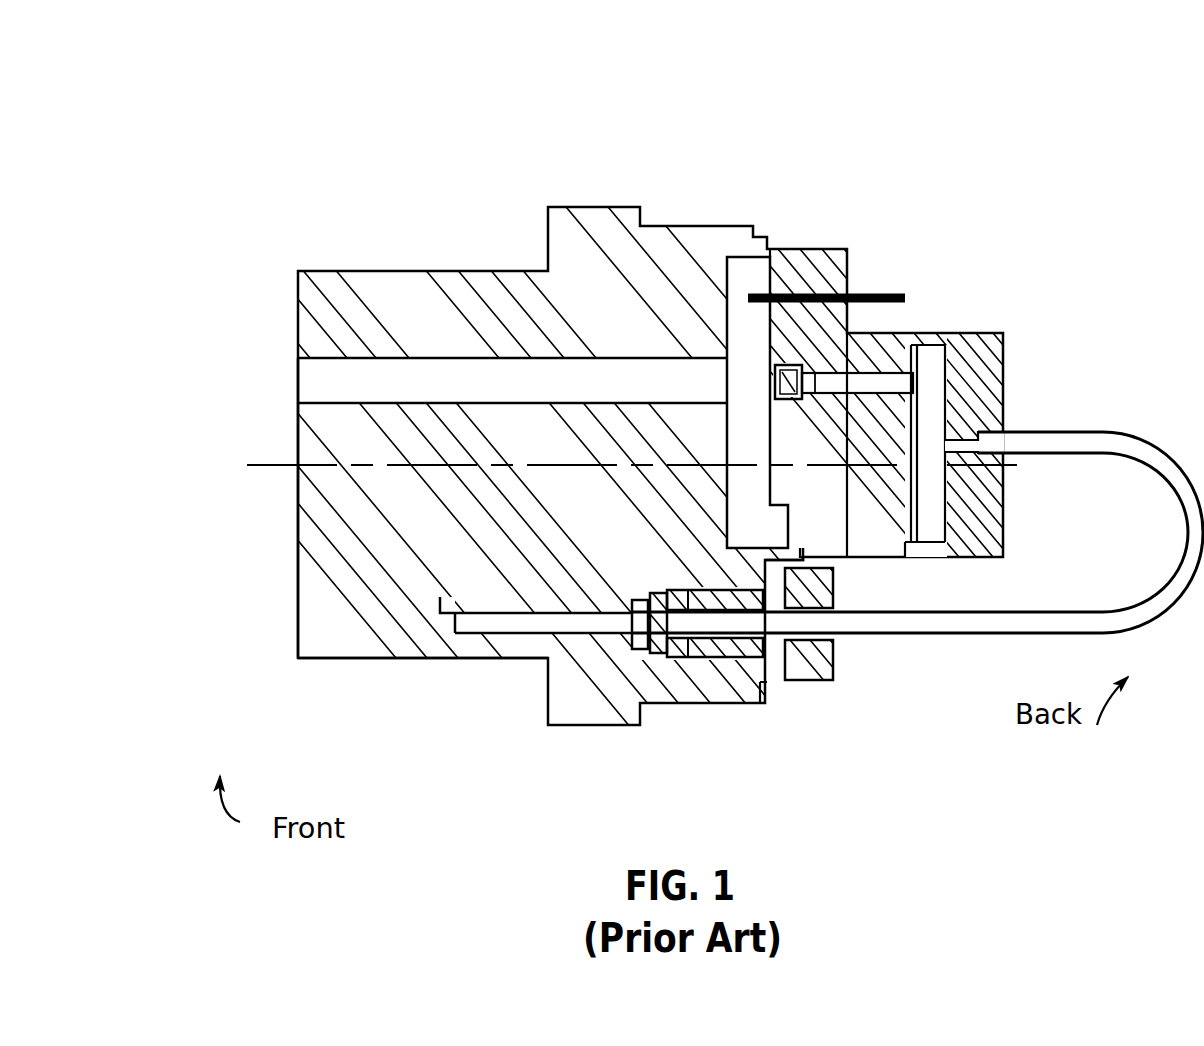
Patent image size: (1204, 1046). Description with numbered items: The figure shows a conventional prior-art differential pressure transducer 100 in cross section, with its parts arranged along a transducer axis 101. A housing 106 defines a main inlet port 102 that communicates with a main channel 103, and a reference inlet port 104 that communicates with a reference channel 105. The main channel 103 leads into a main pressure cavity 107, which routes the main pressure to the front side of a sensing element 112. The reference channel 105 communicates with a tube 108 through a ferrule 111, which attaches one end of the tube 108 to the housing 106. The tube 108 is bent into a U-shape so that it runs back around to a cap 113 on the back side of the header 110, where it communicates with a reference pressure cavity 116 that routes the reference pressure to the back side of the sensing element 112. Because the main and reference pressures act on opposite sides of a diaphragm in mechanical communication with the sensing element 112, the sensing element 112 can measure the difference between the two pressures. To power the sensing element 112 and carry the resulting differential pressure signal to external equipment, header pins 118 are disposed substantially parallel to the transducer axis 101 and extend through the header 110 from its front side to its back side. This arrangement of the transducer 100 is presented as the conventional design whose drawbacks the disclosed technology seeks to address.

The differential pressure transducer 100 is at (733, 84).
The transducer axis 101 is at (288, 468).
The main inlet port 102 is at (294, 383).
The main channel 103 is at (457, 375).
The reference inlet port 104 is at (446, 665).
The reference channel 105 is at (585, 628).
The housing 106 is at (382, 572).
The main pressure cavity 107 is at (745, 392).
The tube 108 is at (1130, 450).
The header 110 is at (892, 363).
The ferrule 111 is at (811, 670).
The sensing element 112 is at (778, 382).
The cap 113 is at (982, 400).
The reference pressure cavity 116 is at (800, 390).
The header pins 118 is at (853, 295).